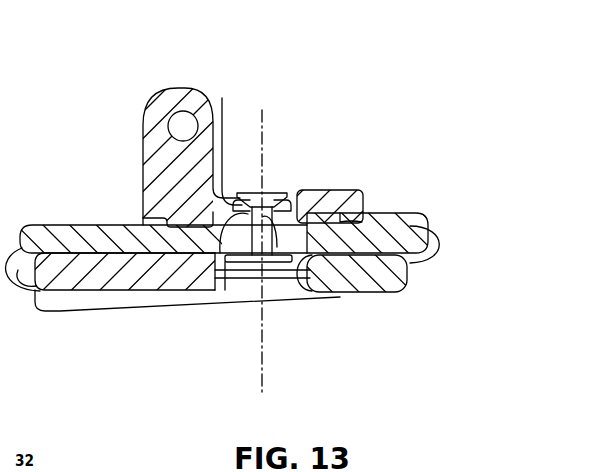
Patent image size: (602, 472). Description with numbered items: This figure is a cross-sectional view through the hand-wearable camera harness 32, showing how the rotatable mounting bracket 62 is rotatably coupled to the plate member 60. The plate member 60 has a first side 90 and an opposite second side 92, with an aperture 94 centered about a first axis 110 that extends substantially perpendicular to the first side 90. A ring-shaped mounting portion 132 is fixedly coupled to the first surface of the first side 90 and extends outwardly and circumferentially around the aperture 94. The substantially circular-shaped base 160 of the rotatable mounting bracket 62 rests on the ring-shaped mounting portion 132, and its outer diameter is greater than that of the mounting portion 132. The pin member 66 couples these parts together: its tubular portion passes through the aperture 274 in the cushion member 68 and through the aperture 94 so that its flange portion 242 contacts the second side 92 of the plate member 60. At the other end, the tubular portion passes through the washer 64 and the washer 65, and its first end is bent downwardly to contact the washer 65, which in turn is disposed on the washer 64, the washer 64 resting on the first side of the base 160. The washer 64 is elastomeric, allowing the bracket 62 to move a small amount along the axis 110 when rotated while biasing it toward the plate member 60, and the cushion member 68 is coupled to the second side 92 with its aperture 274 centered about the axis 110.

The hand-wearable camera harness 32 is at (450, 128).
The plate member 60 is at (447, 243).
The rotatable mounting bracket 62 is at (197, 86).
The washer 64 is at (187, 226).
The washer 65 is at (280, 193).
The pin member 66 is at (314, 250).
The cushion member 68 is at (410, 289).
The first side 90 is at (73, 225).
The second side 92 is at (88, 268).
The aperture 94 is at (216, 258).
The first axis 110 is at (262, 379).
The ring-shaped mounting portion 132 is at (372, 213).
The substantially circular-shaped base 160 is at (330, 200).
The flange portion 242 is at (276, 263).
The aperture 274 is at (178, 280).